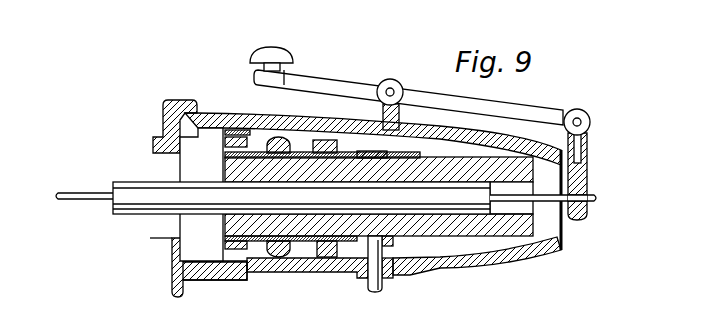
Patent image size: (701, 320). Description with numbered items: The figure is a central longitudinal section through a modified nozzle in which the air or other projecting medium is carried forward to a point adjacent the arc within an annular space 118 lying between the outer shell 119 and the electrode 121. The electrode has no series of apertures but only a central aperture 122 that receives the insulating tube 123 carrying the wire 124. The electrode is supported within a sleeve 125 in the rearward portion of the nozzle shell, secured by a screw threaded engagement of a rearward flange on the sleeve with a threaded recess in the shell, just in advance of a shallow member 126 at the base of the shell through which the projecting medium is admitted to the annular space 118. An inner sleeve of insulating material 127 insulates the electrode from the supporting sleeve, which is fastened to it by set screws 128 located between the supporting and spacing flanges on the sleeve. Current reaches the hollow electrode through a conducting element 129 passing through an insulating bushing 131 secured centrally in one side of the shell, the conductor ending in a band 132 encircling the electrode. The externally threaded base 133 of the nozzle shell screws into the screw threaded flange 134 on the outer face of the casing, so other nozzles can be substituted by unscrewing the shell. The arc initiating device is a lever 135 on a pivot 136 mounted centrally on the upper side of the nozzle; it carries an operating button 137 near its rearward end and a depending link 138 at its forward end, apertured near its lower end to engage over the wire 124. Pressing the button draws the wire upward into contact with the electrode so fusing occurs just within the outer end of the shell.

The annular space 118 is at (503, 246).
The outer shell 119 is at (451, 271).
The electrode 121 is at (531, 229).
The central aperture 122 is at (523, 192).
The insulating tube 123 is at (132, 215).
The wire 124 is at (82, 193).
The sleeve 125 is at (357, 153).
The shallow member 126 is at (190, 165).
The inner sleeve of insulating material 127 is at (228, 233).
The set screws 128 is at (288, 258).
The conducting element 129 is at (383, 286).
The insulating bushing 131 is at (394, 277).
The band 132 is at (393, 241).
The base of the nozzle shell 133 is at (195, 281).
The screw threaded flange 134 is at (183, 298).
The lever 135 is at (326, 76).
The pivot 136 is at (394, 82).
The operating button 137 is at (283, 57).
The depending link 138 is at (588, 162).